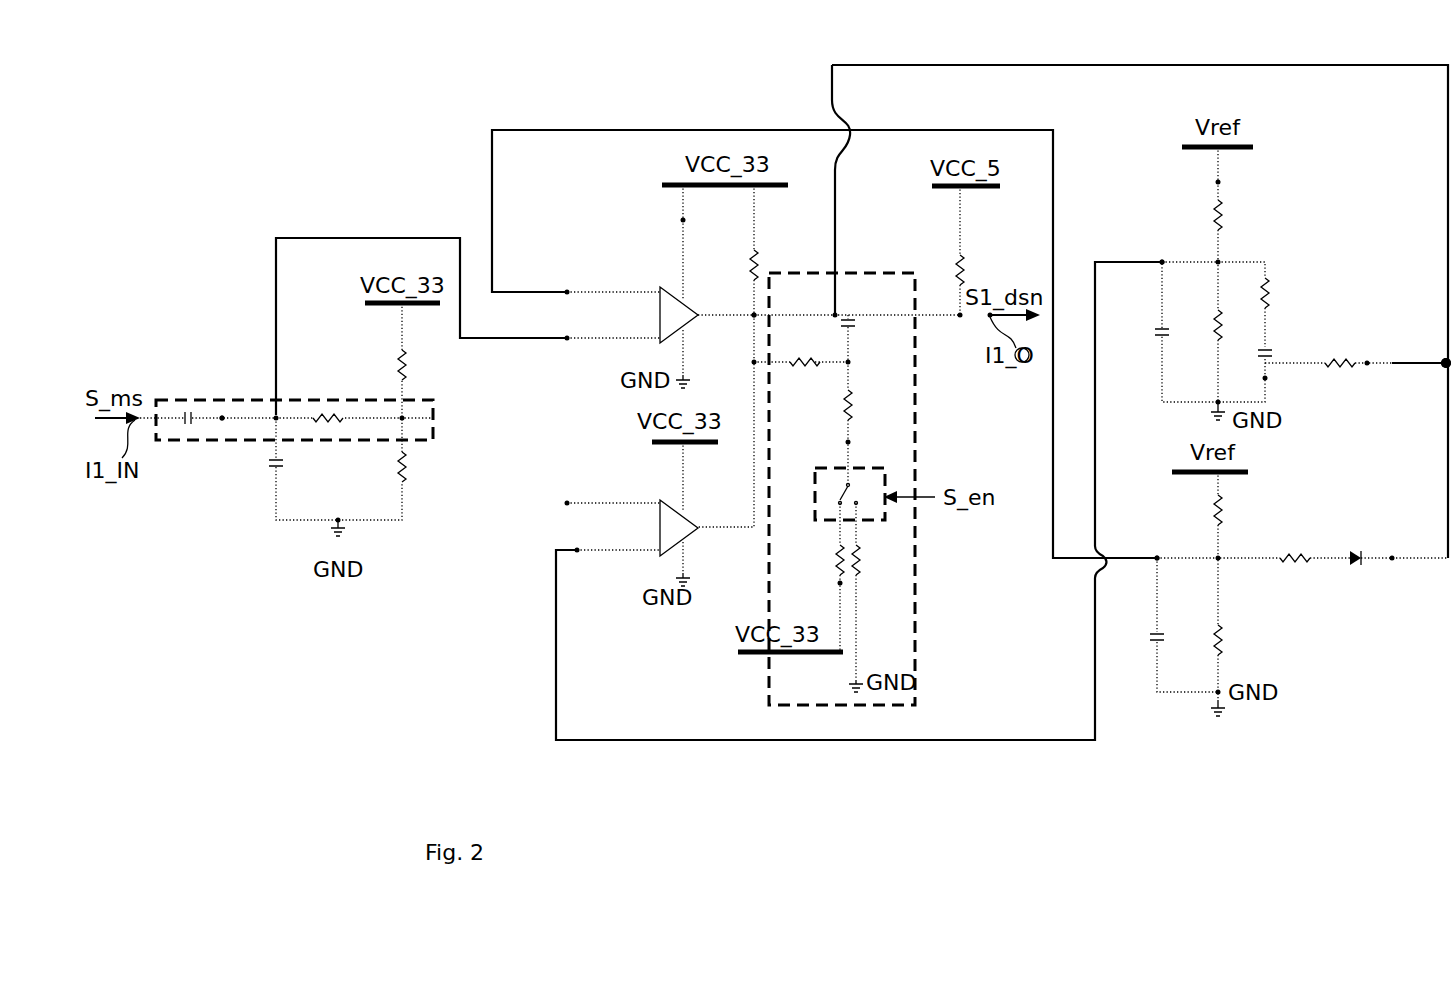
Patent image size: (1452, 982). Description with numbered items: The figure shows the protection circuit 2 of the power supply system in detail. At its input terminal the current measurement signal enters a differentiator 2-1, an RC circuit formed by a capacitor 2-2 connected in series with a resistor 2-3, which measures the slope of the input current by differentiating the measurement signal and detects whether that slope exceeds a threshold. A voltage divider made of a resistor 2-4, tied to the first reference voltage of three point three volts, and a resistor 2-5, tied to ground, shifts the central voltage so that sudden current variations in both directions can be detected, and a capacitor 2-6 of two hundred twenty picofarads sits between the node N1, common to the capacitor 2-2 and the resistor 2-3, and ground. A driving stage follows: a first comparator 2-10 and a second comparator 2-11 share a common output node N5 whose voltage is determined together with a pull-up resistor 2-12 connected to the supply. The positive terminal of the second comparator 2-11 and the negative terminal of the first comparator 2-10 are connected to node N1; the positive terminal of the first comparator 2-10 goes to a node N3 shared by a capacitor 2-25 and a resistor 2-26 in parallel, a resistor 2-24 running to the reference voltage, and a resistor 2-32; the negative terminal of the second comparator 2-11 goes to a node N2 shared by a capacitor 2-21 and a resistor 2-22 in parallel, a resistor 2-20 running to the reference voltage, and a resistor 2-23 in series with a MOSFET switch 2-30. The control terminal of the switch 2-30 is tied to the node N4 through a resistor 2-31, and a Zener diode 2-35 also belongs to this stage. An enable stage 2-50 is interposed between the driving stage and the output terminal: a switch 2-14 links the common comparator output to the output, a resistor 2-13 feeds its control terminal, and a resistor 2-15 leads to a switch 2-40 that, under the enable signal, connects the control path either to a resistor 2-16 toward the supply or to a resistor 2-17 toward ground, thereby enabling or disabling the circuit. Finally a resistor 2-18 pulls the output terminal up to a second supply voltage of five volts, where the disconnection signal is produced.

The protection circuit 2 is at (286, 152).
The differentiator 2-1 is at (192, 440).
The capacitor 2-2 is at (186, 400).
The resistor 2-3 is at (331, 396).
The resistor 2-4 is at (381, 357).
The resistor 2-5 is at (381, 467).
The capacitor 2-6 is at (300, 464).
The first comparator 2-10 is at (702, 316).
The second comparator 2-11 is at (702, 529).
The resistor 2-12 is at (786, 265).
The resistor 2-13 is at (801, 377).
The switch 2-14 is at (866, 301).
The resistor 2-15 is at (879, 405).
The resistor 2-16 is at (812, 559).
The resistor 2-17 is at (887, 556).
The resistor 2-18 is at (988, 269).
The resistor 2-20 is at (1189, 215).
The capacitor 2-21 is at (1137, 335).
The resistor 2-22 is at (1196, 309).
The resistor 2-23 is at (1294, 293).
The resistor 2-24 is at (1190, 510).
The capacitor 2-25 is at (1133, 636).
The resistor 2-26 is at (1247, 640).
The switch 2-30 is at (1295, 338).
The resistor 2-31 is at (1341, 378).
The resistor 2-32 is at (1295, 538).
The Zener diode 2-35 is at (1394, 572).
The switch 2-40 is at (886, 470).
The enable stage 2-50 is at (820, 705).
The node N1 is at (222, 412).
The node N2 is at (1162, 262).
The node N3 is at (1157, 558).
The node N4 is at (1446, 363).
The node N5 is at (754, 314).